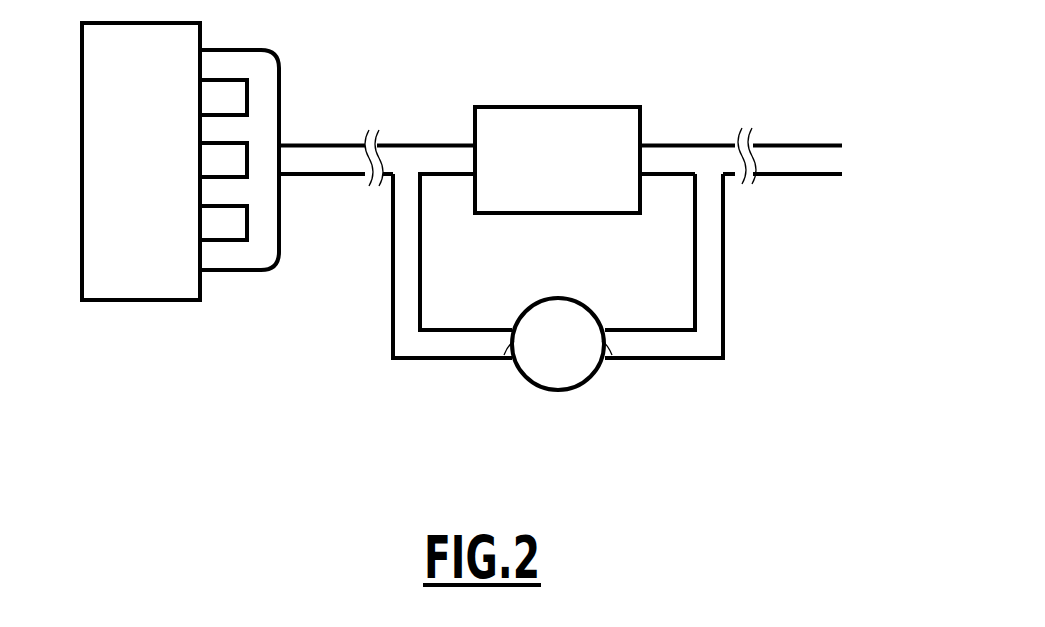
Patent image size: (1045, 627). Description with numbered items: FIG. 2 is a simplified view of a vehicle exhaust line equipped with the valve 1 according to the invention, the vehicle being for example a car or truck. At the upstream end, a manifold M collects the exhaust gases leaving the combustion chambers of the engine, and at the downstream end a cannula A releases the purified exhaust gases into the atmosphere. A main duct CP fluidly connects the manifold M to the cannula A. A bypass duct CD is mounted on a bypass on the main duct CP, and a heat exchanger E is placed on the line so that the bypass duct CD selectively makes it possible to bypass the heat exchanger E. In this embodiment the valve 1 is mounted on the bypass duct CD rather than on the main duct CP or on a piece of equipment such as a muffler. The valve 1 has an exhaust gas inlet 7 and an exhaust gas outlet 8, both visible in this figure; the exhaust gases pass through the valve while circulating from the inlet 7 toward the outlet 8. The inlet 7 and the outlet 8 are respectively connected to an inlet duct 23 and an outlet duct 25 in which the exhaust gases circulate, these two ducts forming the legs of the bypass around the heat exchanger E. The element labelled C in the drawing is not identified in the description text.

The manifold M is at (95, 122).
The collector C is at (262, 213).
The main duct CP is at (318, 150).
The heat exchanger E is at (557, 106).
The cannula A is at (801, 142).
The bypass duct CD is at (712, 260).
The inlet duct 23 is at (388, 359).
The outlet duct 25 is at (727, 359).
The valve 1 is at (557, 405).
The exhaust gas inlet 7 is at (504, 356).
The exhaust gas outlet 8 is at (612, 356).